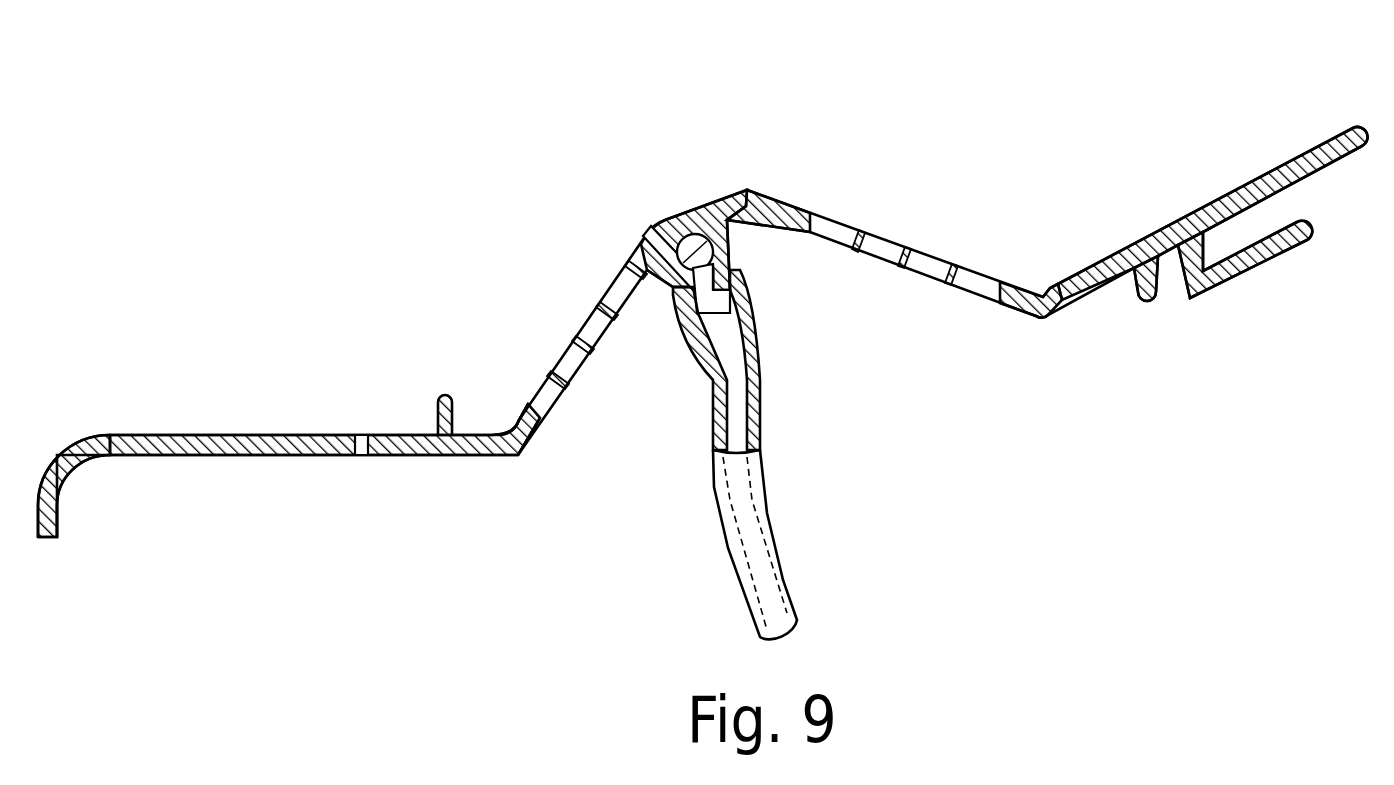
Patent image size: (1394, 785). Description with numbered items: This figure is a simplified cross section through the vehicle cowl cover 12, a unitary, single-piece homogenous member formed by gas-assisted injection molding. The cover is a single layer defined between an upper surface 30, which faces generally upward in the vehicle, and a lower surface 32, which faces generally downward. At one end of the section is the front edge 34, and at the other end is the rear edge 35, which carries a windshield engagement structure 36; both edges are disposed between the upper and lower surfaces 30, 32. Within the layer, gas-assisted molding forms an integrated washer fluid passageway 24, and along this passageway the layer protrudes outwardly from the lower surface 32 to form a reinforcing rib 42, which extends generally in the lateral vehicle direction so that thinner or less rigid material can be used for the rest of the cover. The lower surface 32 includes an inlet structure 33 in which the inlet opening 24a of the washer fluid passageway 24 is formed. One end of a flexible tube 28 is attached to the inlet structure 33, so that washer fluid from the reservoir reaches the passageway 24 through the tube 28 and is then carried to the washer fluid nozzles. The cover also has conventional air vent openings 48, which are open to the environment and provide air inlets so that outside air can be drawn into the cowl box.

The vehicle cowl cover 12 is at (878, 182).
The washer fluid passageway 24 is at (701, 233).
The inlet opening 24a is at (742, 323).
The flexible tube 28 is at (775, 527).
The upper surface 30 is at (515, 411).
The lower surface 32 is at (537, 446).
The inlet structure 33 is at (715, 297).
The front edge 34 is at (42, 540).
The rear edge 35 is at (1363, 130).
The windshield engagement structure 36 is at (1266, 270).
The reinforcing rib 42 is at (727, 243).
The air vent openings 48 is at (575, 337).